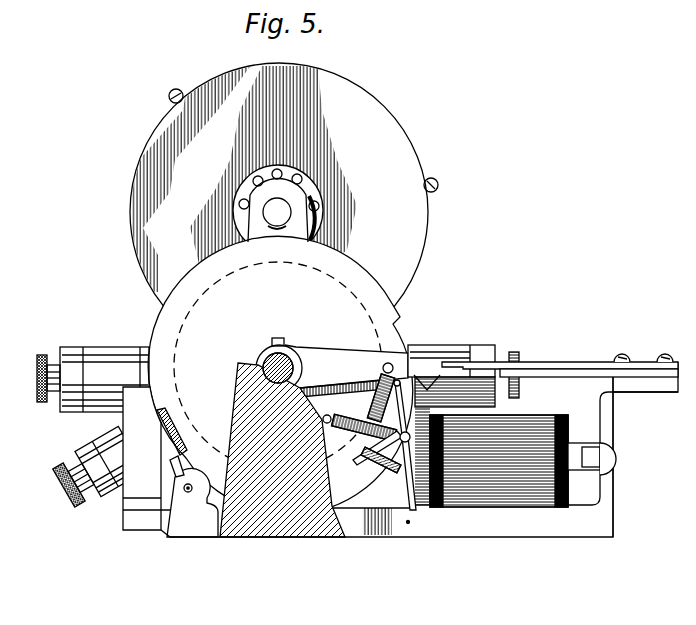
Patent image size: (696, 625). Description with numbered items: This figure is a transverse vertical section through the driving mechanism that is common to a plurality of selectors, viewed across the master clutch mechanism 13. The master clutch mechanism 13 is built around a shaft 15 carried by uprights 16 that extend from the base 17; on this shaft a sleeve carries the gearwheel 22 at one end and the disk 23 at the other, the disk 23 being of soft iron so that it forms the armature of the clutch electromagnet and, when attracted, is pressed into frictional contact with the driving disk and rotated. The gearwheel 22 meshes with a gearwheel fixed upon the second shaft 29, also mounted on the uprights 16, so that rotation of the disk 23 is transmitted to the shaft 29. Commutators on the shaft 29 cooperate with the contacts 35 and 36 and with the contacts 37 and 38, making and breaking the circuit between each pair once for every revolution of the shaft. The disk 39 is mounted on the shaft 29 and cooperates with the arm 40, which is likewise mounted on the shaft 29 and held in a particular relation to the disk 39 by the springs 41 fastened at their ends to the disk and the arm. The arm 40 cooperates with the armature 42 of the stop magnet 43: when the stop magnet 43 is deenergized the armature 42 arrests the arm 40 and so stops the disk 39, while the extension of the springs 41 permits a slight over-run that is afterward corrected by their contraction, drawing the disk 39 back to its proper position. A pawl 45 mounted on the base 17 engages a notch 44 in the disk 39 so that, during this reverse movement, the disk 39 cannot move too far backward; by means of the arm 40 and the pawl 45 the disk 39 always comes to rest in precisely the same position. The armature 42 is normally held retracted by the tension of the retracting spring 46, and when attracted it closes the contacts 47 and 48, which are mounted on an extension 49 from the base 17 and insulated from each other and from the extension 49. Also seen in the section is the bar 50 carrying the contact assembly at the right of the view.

The master clutch mechanism 13 is at (283, 204).
The shaft 15 is at (277, 213).
The uprights 16 is at (292, 193).
The base 17 is at (590, 521).
The gearwheel 22 is at (311, 189).
The disk 23 is at (269, 210).
The shaft 29 is at (268, 357).
The contact 35 is at (110, 441).
The contact 36 is at (114, 357).
The contact 37 is at (434, 350).
The contact 38 is at (395, 469).
The disk 39 is at (360, 279).
The arm 40 is at (329, 363).
The springs 41 is at (372, 404).
The armature 42 is at (404, 482).
The stop magnet 43 is at (478, 494).
The notch 44 is at (165, 418).
The pawl 45 is at (168, 463).
The retracting spring 46 is at (360, 433).
The contact 47 is at (567, 374).
The contact 48 is at (548, 361).
The extension 49 is at (608, 402).
The terminal bar 50 is at (582, 370).